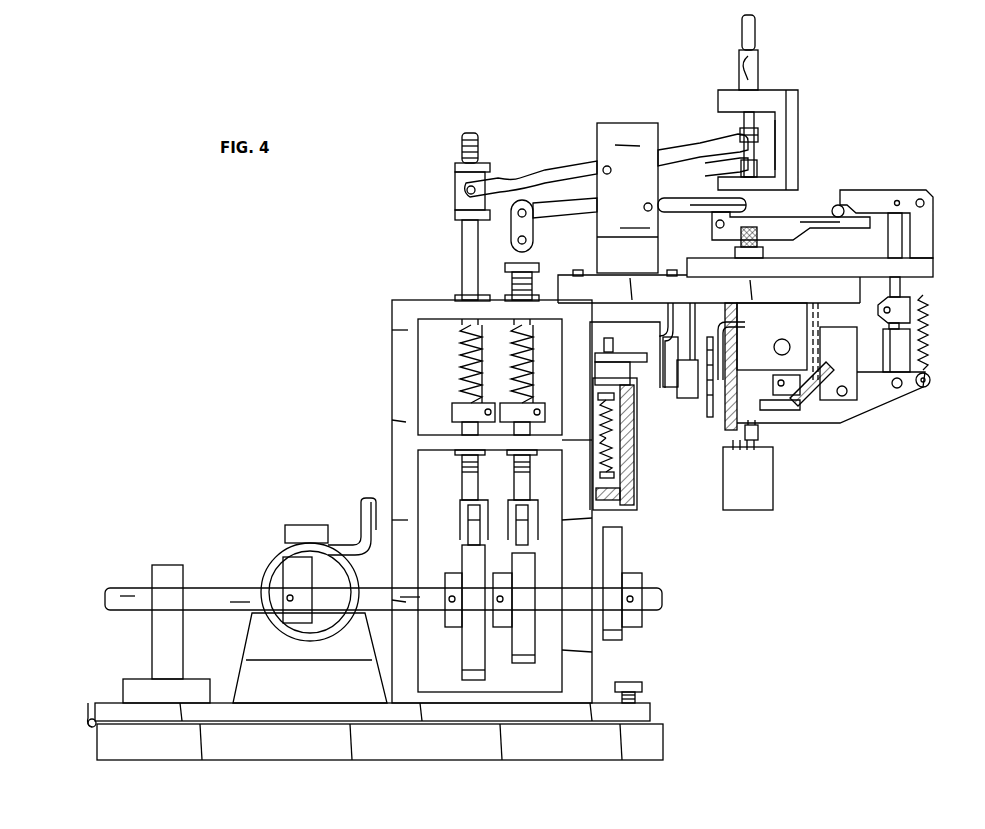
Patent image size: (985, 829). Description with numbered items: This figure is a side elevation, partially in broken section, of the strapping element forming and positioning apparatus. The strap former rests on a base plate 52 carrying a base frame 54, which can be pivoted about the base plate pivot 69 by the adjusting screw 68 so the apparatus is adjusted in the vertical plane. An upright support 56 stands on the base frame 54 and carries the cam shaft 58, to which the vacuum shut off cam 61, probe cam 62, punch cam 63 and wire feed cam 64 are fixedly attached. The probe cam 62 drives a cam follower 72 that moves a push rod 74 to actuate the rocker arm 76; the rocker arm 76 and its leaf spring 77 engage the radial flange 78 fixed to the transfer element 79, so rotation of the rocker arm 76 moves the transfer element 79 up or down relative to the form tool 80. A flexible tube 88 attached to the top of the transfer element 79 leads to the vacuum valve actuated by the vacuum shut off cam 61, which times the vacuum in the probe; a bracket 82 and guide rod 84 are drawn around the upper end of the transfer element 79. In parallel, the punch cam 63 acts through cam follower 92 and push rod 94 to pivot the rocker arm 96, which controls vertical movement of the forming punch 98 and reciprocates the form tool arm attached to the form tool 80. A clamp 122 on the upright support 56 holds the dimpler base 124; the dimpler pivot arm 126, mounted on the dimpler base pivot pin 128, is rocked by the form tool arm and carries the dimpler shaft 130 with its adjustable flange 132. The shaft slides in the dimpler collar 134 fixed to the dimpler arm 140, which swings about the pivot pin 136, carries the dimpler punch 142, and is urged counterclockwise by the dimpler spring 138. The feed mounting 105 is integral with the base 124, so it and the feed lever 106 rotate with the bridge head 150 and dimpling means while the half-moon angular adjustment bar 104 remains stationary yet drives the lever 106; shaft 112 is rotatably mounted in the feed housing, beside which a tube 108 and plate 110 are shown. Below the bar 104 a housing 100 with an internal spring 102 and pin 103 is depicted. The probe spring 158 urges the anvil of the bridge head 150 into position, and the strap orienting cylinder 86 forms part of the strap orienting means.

The base plate 52 is at (662, 742).
The base frame 54 is at (650, 710).
The upright support 56 is at (418, 342).
The cam shaft 58 is at (108, 608).
The vacuum shut off cam 61 is at (293, 565).
The probe cam 62 is at (465, 668).
The punch cam 63 is at (530, 660).
The wire feed cam 64 is at (622, 540).
The adjusting screw 68 is at (642, 687).
The base plate pivot 69 is at (88, 722).
The cam follower 72 is at (468, 524).
The push rod 74 is at (465, 250).
The rocker arm 76 is at (548, 176).
The leaf spring 77 is at (722, 142).
The radial flange 78 is at (758, 138).
The transfer element 79 is at (740, 163).
The form tool 80 is at (795, 124).
The bracket 82 is at (790, 88).
The rod 84 is at (756, 66).
The strap orienting cylinder 86 is at (744, 66).
The flexible tube 88 is at (756, 28).
The cam follower 92 is at (528, 524).
The push rod 94 is at (532, 272).
The rocker arm 96 is at (553, 220).
The forming punch 98 is at (760, 200).
The collar 100 is at (596, 490).
The spring 102 is at (600, 456).
The pin 103 is at (600, 414).
The angular adjustment bar 104 is at (606, 356).
The feed mounting 105 is at (666, 312).
The feed lever 106 is at (668, 388).
The tube 108 is at (690, 310).
The plate 110 is at (710, 417).
The shaft 112 is at (698, 395).
The clamp 122 is at (708, 288).
The dimpler base 124 is at (846, 268).
The dimpler pivot arm 126 is at (872, 196).
The dimpler base pivot pin 128 is at (932, 200).
The dimpler shaft 130 is at (900, 290).
The adjustable flange 132 is at (906, 312).
The dimpler collar 134 is at (928, 335).
The pivot pin 136 is at (848, 395).
The dimpler spring 138 is at (928, 365).
The dimpler arm 140 is at (773, 440).
The dimpler punch 142 is at (745, 432).
The bridge head 150 is at (790, 410).
The probe spring 158 is at (812, 395).